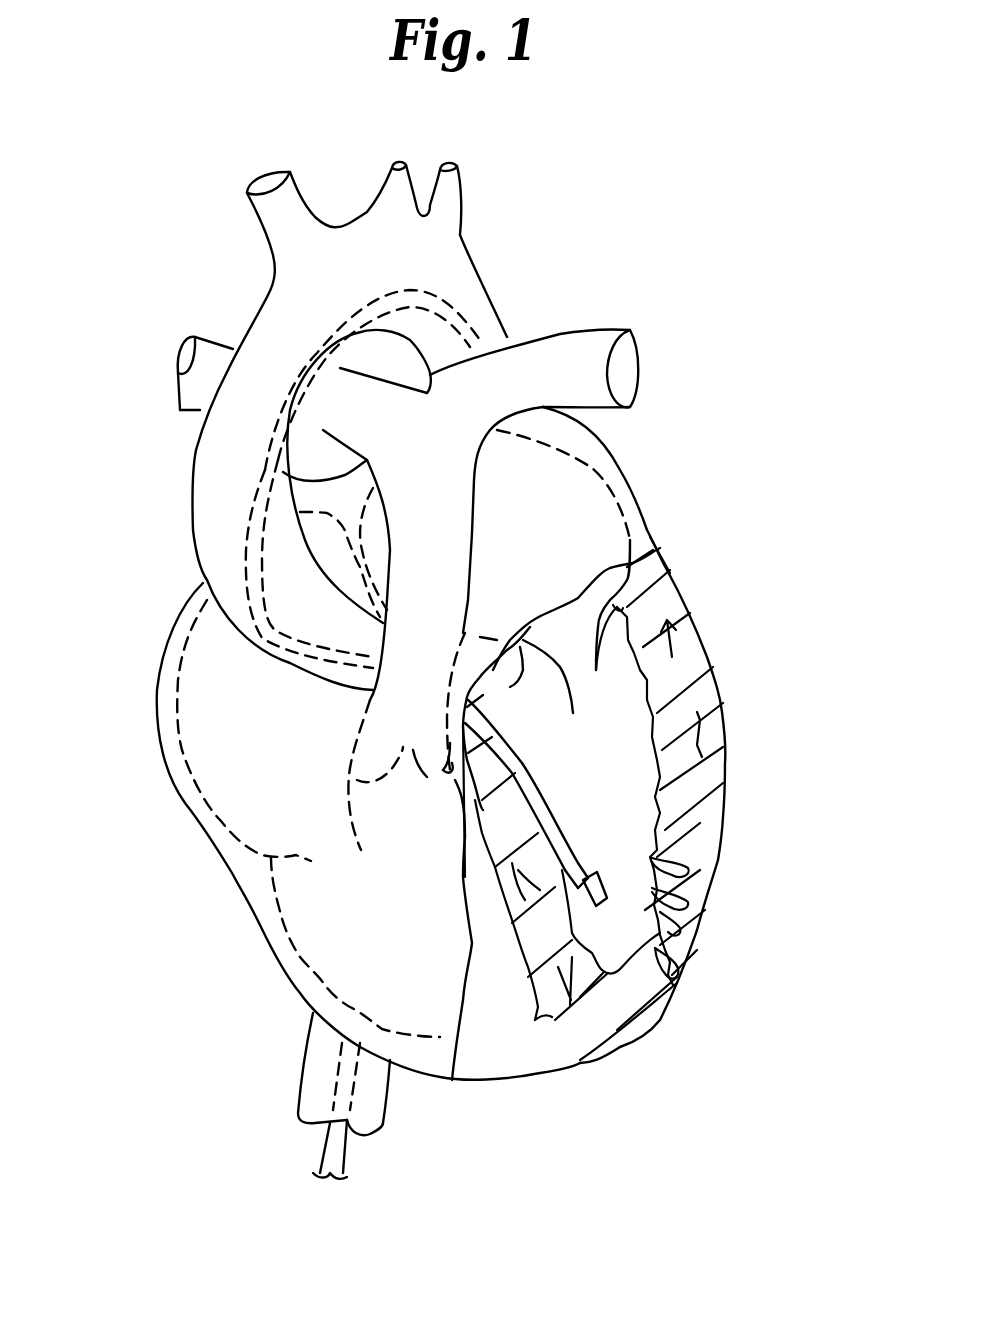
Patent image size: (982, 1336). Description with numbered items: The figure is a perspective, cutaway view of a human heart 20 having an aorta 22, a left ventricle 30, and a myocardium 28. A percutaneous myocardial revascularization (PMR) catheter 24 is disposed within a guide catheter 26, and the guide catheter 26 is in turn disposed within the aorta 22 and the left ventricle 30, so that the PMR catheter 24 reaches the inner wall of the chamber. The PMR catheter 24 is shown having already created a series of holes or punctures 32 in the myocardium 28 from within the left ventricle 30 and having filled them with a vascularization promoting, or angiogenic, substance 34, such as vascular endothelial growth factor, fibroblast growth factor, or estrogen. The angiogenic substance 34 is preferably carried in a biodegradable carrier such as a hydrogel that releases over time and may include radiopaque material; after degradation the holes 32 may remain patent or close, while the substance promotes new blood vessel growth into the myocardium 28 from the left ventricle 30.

The human heart 20 is at (586, 258).
The aorta 22 is at (217, 463).
The PMR catheter 24 is at (655, 840).
The guide catheter 26 is at (525, 770).
The myocardium 28 is at (705, 842).
The left ventricle 30 is at (607, 687).
The holes 32 is at (687, 915).
The angiogenic substance 34 is at (677, 870).